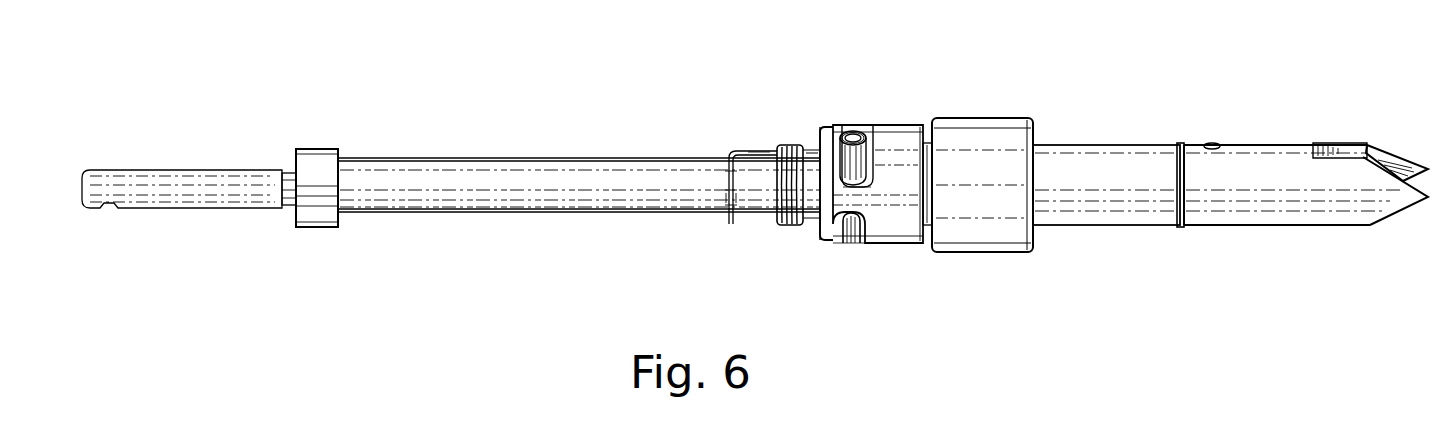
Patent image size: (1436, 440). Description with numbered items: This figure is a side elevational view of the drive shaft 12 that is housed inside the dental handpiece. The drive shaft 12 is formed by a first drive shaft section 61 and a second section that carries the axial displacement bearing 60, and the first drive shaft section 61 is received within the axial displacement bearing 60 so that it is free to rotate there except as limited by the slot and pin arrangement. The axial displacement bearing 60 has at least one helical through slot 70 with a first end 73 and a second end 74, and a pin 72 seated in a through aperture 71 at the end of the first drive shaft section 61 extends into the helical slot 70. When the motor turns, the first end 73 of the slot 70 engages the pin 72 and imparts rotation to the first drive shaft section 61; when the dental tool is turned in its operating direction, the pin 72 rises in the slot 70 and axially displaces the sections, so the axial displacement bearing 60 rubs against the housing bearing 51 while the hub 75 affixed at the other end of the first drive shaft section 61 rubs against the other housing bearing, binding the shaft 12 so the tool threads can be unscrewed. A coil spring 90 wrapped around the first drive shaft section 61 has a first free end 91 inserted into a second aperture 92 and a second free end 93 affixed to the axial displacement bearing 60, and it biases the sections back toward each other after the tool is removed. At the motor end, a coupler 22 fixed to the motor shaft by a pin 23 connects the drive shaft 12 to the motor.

The drive shaft 12 is at (626, 158).
The coupler 22 is at (1270, 197).
The pin 23 is at (1213, 143).
The bearing 51 is at (981, 225).
The axial displacement bearing 60 is at (900, 218).
The first drive shaft section 61 is at (452, 192).
The helical through slot 70 is at (851, 136).
The through aperture 71 is at (853, 240).
The pin 72 is at (846, 138).
The first end of slot 73 is at (872, 195).
The second end of slot 74 is at (813, 236).
The hub 75 is at (312, 214).
The coil spring 90 is at (776, 222).
The first free end of coil spring 91 is at (748, 150).
The second aperture 92 is at (723, 183).
The second free end of coil spring 93 is at (810, 147).